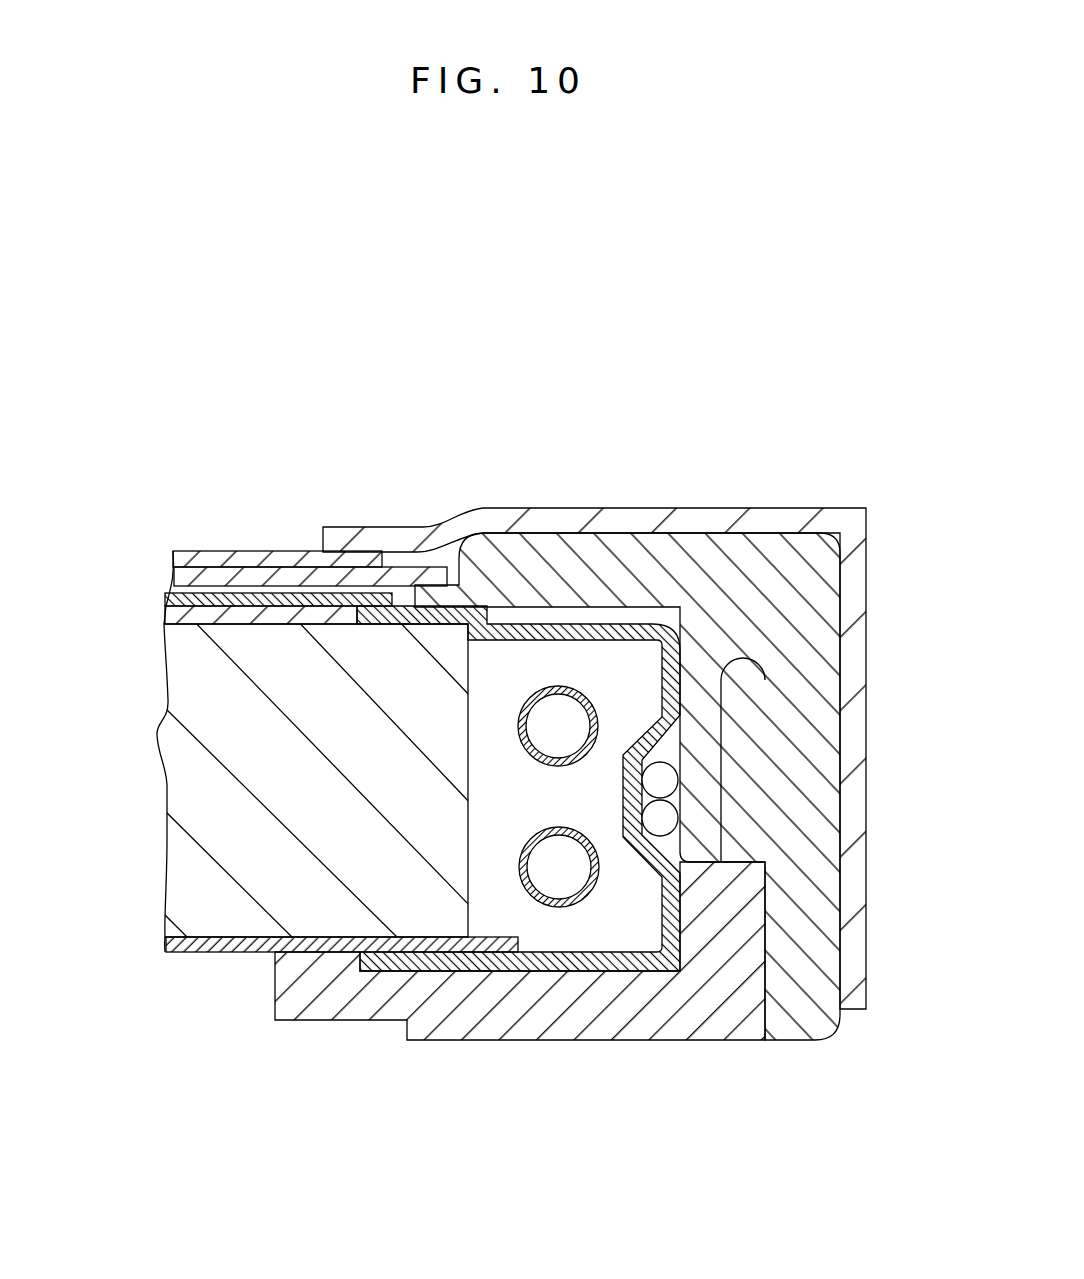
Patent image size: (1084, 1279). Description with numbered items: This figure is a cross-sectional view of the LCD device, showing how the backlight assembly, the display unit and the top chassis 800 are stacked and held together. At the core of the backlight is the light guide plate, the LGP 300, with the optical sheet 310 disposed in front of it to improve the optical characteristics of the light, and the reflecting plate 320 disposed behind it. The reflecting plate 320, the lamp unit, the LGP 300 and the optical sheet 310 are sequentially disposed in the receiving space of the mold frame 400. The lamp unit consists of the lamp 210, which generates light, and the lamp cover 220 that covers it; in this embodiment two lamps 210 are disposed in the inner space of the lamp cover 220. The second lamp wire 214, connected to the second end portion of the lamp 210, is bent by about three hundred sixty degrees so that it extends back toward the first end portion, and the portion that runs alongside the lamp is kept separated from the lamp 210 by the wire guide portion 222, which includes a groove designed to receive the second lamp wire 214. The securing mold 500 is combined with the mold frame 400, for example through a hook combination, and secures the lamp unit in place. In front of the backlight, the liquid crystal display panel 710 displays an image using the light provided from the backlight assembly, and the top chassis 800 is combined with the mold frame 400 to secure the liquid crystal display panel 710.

The top chassis 800 is at (771, 522).
The securing mold 500 is at (663, 548).
The mold frame 400 is at (707, 997).
The lamp cover 220 is at (523, 955).
The lamp 210 is at (586, 896).
The second lamp wire 214 is at (667, 782).
The wire guide portion 222 is at (630, 822).
The LGP 300 is at (192, 771).
The optical sheet 310 is at (166, 606).
The reflecting plate 320 is at (166, 948).
The liquid crystal display panel 710 is at (173, 562).